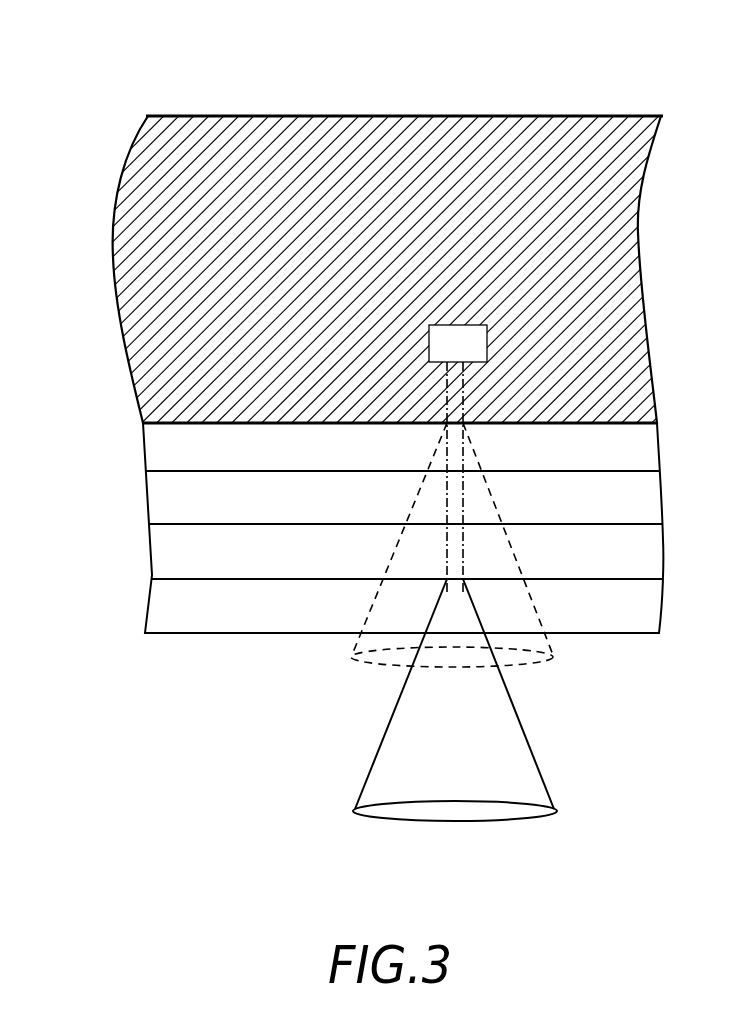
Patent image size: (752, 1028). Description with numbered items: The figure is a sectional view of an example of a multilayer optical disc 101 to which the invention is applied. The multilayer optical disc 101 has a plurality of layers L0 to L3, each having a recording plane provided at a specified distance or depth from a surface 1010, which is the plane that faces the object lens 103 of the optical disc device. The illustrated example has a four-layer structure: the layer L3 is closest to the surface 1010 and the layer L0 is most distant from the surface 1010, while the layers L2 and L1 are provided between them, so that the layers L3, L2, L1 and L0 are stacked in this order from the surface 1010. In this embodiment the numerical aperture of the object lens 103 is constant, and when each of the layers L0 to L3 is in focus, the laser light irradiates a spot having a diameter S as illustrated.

The multilayer optical disc 101 is at (262, 116).
The surface 1010 is at (178, 634).
The object lens 103 is at (505, 820).
The layer L0 is at (147, 428).
The layer L1 is at (151, 473).
The layer L2 is at (152, 526).
The layer L3 is at (152, 581).
The spot diameter S is at (515, 383).